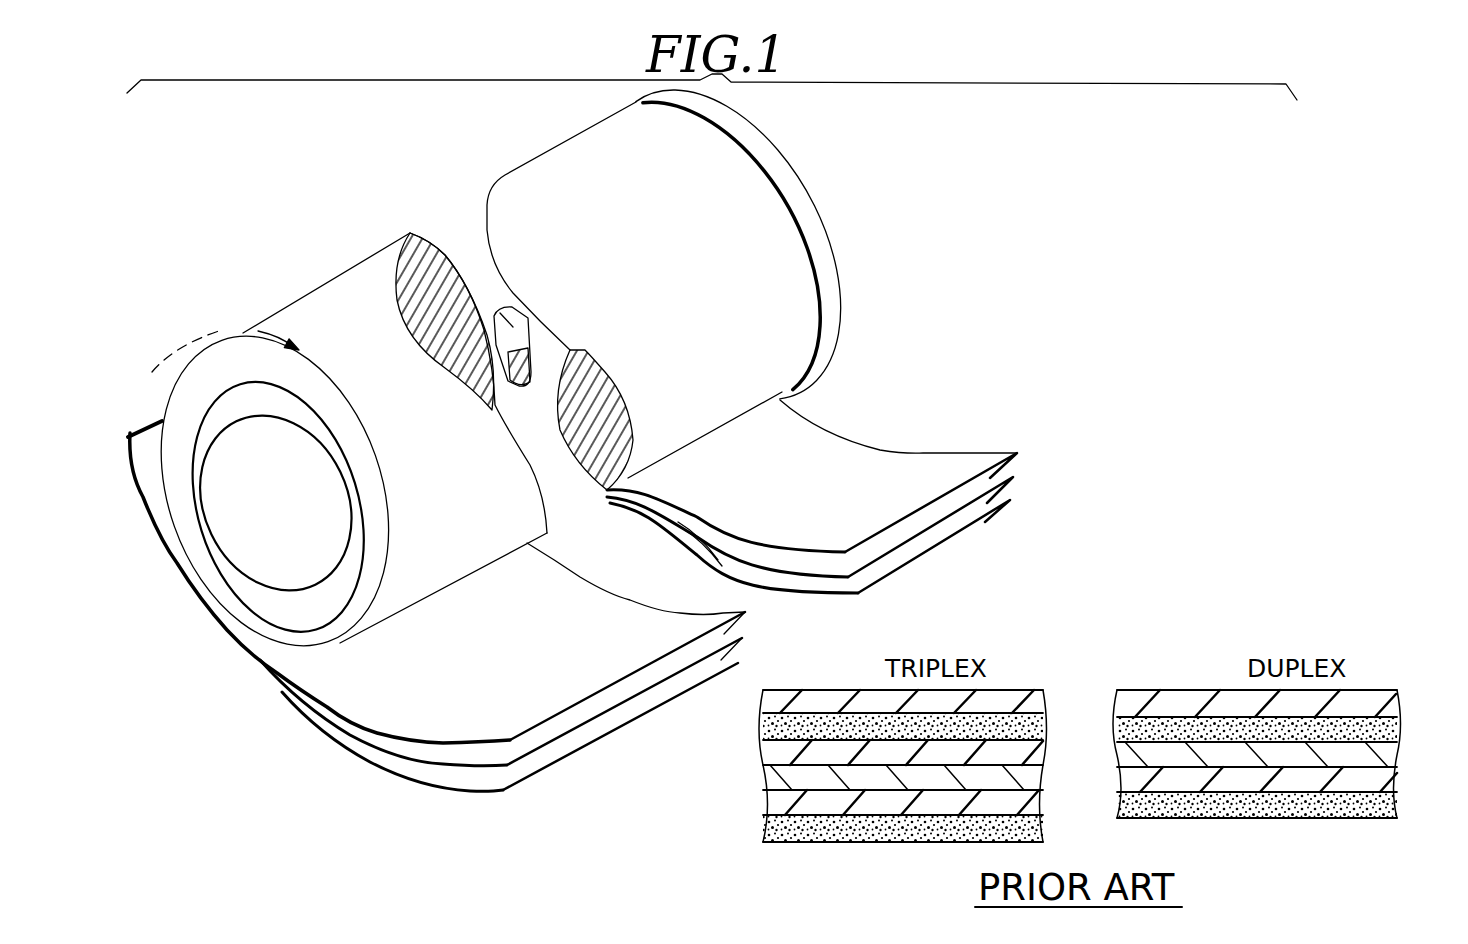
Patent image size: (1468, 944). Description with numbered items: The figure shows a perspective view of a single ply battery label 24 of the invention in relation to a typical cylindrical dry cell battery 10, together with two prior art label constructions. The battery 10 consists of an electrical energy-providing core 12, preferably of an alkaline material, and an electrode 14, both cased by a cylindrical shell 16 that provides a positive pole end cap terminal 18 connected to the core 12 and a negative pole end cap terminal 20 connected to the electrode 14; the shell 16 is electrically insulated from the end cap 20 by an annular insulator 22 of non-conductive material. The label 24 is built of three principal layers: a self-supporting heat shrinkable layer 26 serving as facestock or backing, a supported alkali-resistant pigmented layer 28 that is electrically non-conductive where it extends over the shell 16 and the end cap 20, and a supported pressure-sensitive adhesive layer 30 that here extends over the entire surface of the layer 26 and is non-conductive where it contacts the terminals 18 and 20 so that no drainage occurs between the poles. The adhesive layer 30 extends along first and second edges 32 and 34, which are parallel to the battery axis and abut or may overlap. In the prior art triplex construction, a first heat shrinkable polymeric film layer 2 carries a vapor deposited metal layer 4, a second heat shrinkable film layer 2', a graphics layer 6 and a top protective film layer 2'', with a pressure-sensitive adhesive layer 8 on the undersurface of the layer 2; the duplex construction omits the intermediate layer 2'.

The cylindrical dry cell battery 10 is at (833, 203).
The electrical energy-providing core 12 is at (607, 492).
The electrode 14 is at (508, 322).
The cylindrical shell 16 is at (403, 593).
The positive pole end cap terminal 18 is at (317, 623).
The negative pole end cap terminal 20 is at (843, 328).
The annular insulator 22 is at (813, 370).
The single ply battery label 24 is at (985, 523).
The self-supporting heat shrinkable layer 26 is at (860, 587).
The supported alkali-resistant pigmented layer 28 is at (1013, 478).
The supported pressure-sensitive adhesive layer 30 is at (930, 453).
The first edge 32 is at (937, 547).
The second edge 34 is at (128, 437).
The top protective heat shrinkable polymeric film layer 2'' is at (1122, 703).
The second heat shrinkable polymeric film layer 2' is at (942, 756).
The first heat shrinkable polymeric film layer 2 is at (1121, 795).
The metal layer 4 is at (1025, 780).
The graphics layer 6 is at (1025, 730).
The pressure-sensitive adhesive layer 8 is at (1025, 832).